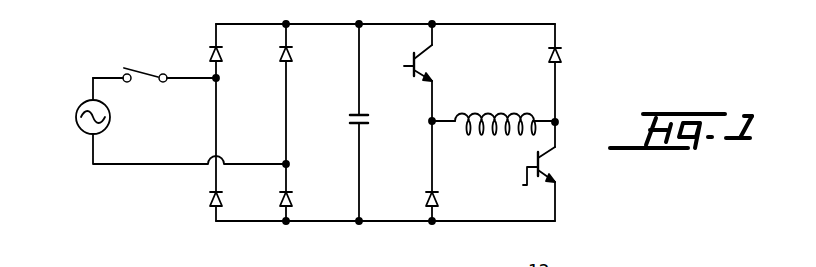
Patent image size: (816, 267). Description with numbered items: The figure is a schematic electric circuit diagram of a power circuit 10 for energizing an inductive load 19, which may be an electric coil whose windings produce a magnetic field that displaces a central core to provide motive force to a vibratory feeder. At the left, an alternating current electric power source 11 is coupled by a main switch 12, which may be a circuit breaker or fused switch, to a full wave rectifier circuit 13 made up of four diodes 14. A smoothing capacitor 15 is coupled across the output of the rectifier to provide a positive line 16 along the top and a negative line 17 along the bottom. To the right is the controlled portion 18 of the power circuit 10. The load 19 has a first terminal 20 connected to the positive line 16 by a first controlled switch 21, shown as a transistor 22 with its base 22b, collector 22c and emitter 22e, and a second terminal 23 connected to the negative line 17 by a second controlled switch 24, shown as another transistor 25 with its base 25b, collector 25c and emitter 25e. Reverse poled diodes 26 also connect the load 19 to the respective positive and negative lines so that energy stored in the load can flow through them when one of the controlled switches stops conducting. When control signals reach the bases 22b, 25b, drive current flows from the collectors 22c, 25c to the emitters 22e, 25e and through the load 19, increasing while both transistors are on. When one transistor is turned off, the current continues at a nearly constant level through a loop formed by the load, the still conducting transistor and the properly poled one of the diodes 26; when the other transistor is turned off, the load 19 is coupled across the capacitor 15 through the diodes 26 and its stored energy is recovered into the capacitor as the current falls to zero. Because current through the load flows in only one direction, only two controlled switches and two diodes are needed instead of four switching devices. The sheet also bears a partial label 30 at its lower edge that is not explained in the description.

The power circuit 10 is at (209, 29).
The alternating current electric power source 11 is at (80, 131).
The main switch 12 is at (135, 67).
The full wave rectifier circuit 13 is at (251, 122).
The diodes 14 is at (222, 53).
The smoothing capacitor 15 is at (353, 113).
The positive line 16 is at (317, 25).
The negative line 17 is at (317, 222).
The controlled portion 18 is at (545, 15).
The inductive load 19 is at (495, 113).
The first terminal 20 is at (435, 125).
The first controlled switch 21 is at (442, 57).
The transistor 22 is at (427, 77).
The base 22b is at (406, 64).
The collector 22c is at (435, 51).
The emitter 22e is at (431, 79).
The second terminal 23 is at (558, 117).
The second controlled switch 24 is at (562, 175).
The transistor 25 is at (547, 167).
The base 25b is at (513, 180).
The collector 25c is at (557, 147).
The emitter 25e is at (555, 186).
The reverse poled diodes 26 is at (440, 198).
The partial label 30 is at (41, 259).